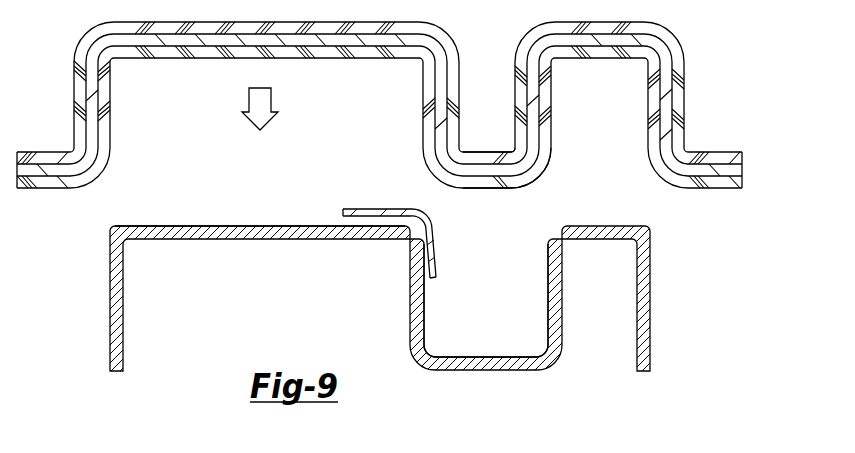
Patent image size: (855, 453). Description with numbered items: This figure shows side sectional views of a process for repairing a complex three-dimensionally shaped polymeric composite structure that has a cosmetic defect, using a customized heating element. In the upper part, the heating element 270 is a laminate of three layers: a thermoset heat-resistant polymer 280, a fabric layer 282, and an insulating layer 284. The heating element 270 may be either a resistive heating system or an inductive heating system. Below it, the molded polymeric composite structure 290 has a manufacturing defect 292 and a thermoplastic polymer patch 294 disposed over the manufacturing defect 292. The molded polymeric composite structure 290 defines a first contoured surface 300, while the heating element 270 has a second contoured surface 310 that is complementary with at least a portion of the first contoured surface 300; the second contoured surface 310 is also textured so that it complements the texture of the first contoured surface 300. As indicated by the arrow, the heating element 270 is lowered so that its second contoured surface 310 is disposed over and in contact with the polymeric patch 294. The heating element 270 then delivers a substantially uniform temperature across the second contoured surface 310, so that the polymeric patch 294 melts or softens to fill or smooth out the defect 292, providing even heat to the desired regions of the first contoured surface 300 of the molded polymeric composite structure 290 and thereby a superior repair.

The heating element 270 is at (411, 131).
The insulating layer 284 is at (743, 155).
The fabric layer 282 is at (743, 170).
The thermoset heat-resistant polymer 280 is at (743, 185).
The second contoured surface 310 is at (537, 178).
The molded polymeric composite structure 290 is at (410, 327).
The manufacturing defect 292 is at (383, 221).
The thermoplastic polymer patch 294 is at (430, 243).
The first contoured surface 300 is at (425, 300).